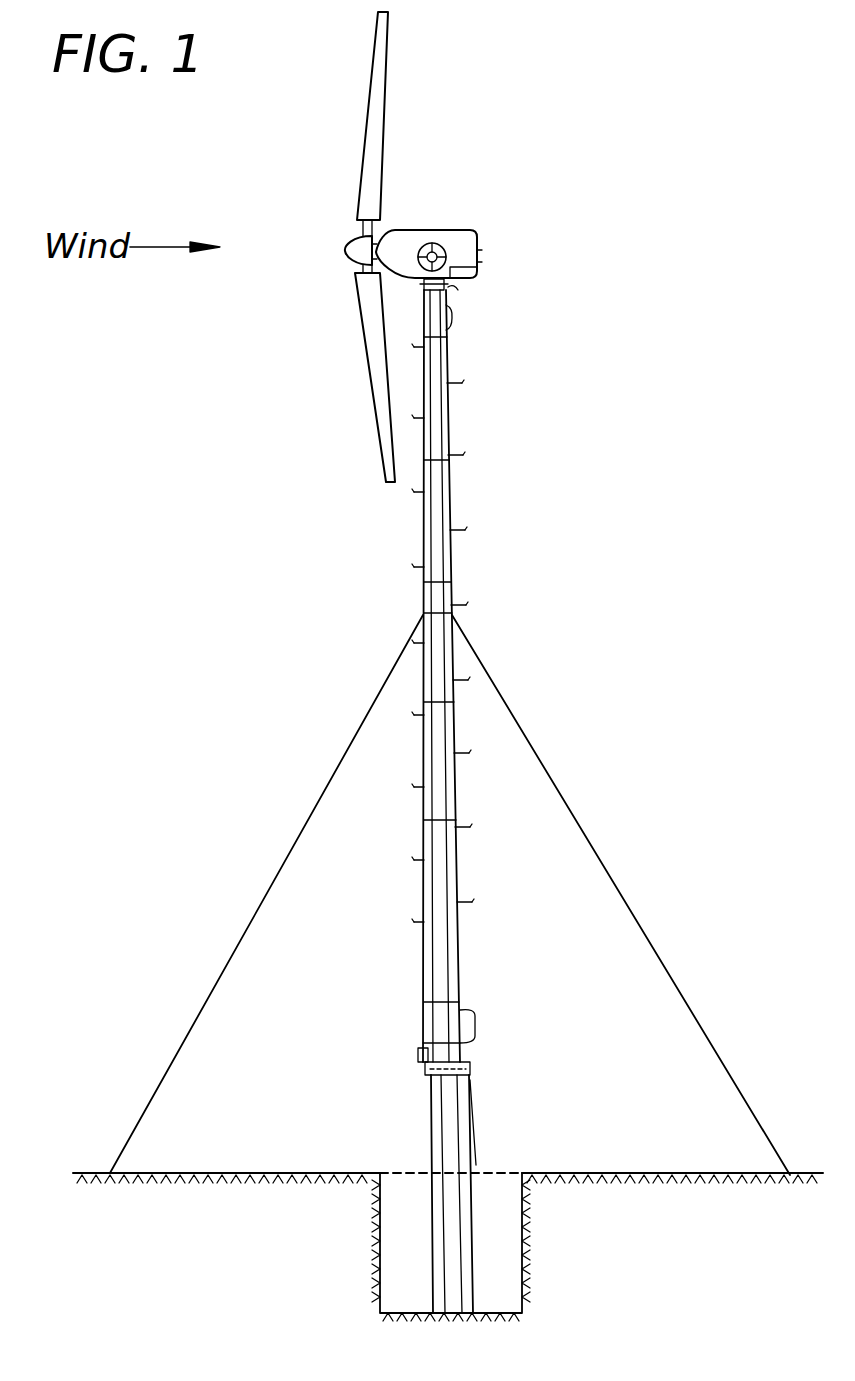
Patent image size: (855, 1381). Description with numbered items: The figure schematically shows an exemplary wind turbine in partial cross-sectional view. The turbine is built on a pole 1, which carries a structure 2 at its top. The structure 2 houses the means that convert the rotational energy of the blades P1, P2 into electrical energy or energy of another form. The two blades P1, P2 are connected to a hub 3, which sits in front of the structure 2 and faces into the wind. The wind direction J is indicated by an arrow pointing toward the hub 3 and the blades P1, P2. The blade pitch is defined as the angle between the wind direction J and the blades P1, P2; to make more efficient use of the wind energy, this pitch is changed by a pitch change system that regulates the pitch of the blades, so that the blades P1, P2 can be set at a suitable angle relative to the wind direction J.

The pole 1 is at (423, 903).
The structure 2 is at (428, 235).
The hub 3 is at (322, 240).
The blade P1 is at (370, 128).
The blade P2 is at (378, 372).
The wind direction J is at (165, 247).